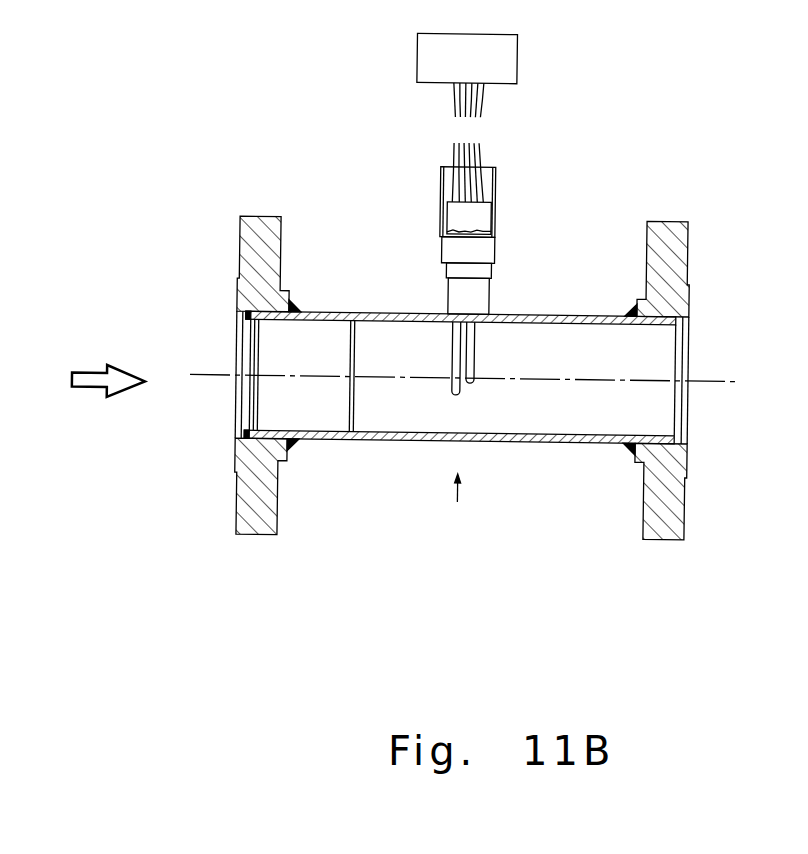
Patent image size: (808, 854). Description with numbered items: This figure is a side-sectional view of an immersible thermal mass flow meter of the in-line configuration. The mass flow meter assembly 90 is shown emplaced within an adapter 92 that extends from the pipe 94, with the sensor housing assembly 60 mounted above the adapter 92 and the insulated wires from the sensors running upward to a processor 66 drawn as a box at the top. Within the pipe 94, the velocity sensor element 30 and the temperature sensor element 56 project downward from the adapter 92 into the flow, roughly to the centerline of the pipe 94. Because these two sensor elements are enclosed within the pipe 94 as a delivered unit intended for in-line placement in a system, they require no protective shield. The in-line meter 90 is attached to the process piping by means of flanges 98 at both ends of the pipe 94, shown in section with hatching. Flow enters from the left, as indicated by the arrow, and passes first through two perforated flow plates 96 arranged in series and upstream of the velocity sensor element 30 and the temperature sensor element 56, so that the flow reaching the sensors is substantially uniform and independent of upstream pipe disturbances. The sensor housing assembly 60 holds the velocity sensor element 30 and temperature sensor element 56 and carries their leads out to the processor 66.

The processor 66 is at (513, 59).
The sensor housing assembly 60 is at (490, 210).
The adapter 92 is at (445, 297).
The pipe 94 is at (518, 312).
The velocity sensor element 30 is at (448, 373).
The temperature sensor element 56 is at (473, 375).
The mass flow meter assembly 90 is at (461, 501).
The perforated flow plates 96 is at (255, 406).
The flanges 98 is at (238, 244).